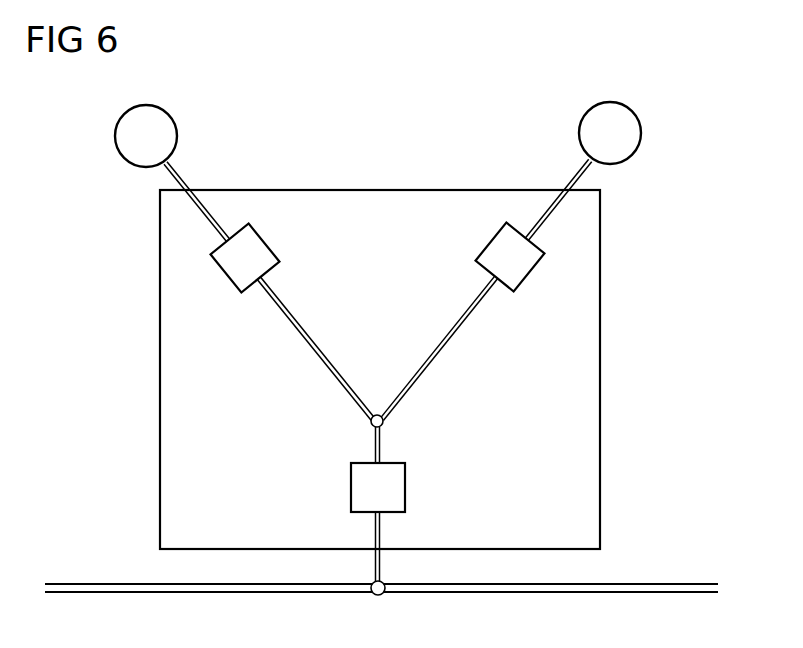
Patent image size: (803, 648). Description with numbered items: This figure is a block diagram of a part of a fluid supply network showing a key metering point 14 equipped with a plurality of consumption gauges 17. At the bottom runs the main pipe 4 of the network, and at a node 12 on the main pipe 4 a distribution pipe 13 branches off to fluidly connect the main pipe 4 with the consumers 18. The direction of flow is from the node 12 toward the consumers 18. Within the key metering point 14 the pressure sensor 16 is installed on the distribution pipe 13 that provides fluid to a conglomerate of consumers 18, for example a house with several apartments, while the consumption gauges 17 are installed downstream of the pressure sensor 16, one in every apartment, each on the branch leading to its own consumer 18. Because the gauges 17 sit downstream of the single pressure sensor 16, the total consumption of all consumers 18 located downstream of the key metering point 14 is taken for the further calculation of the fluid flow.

The main pipe 4 is at (105, 584).
The node 12 is at (373, 595).
The distribution pipe 13 is at (383, 565).
The key metering point 14 is at (376, 190).
The pressure sensor 16 is at (405, 487).
The consumption gauge 17 is at (273, 248).
The consumer 18 is at (117, 152).